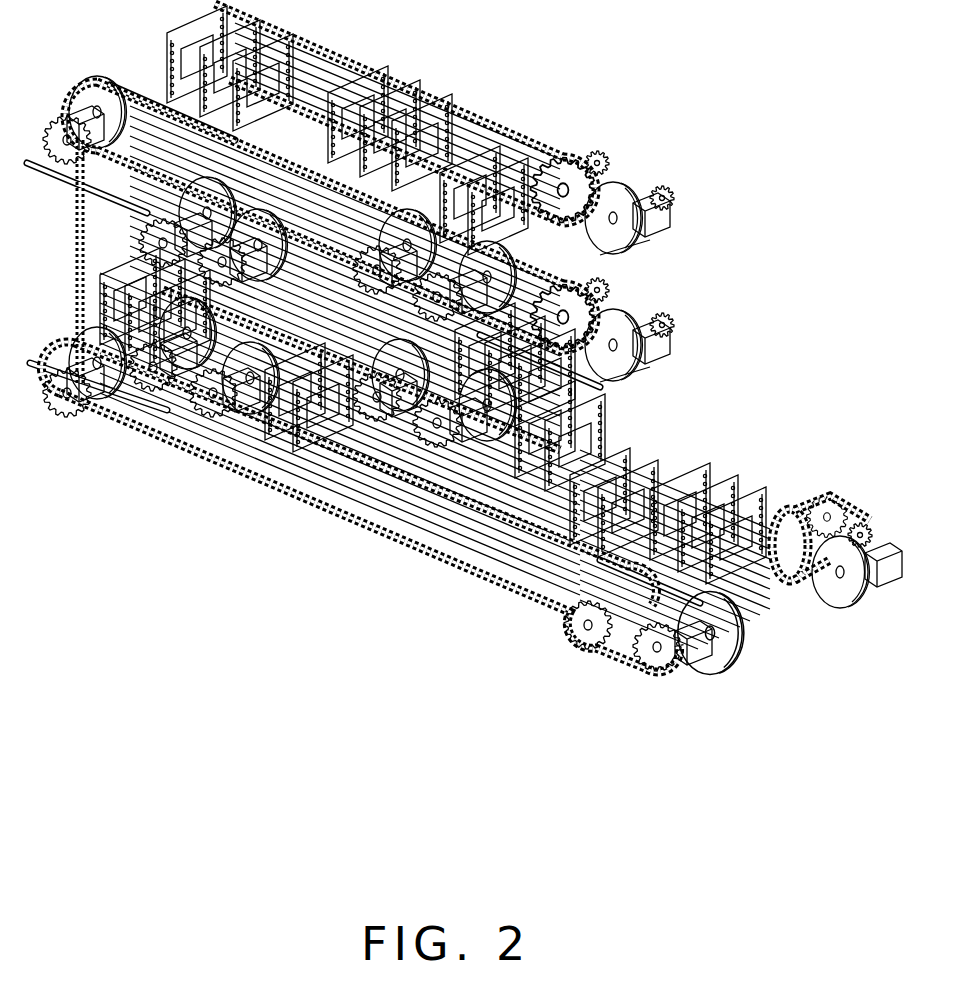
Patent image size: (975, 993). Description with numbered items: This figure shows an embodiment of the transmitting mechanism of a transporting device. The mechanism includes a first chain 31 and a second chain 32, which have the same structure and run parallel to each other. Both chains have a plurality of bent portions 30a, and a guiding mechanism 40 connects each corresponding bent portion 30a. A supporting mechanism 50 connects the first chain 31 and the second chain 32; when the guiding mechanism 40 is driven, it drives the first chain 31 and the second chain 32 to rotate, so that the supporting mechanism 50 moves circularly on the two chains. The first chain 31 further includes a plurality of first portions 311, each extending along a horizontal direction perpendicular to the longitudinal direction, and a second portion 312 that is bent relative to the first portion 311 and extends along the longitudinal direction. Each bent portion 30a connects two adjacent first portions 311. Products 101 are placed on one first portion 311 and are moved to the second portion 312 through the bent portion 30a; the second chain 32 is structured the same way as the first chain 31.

The second chain 32 is at (480, 130).
The bent portion 30a is at (600, 165).
The guiding mechanism 40 is at (658, 226).
The product 101 is at (700, 467).
The supporting mechanism 50 is at (783, 513).
The first chain 31 is at (241, 530).
The first portion 311 is at (240, 472).
The second portion 312 is at (73, 312).